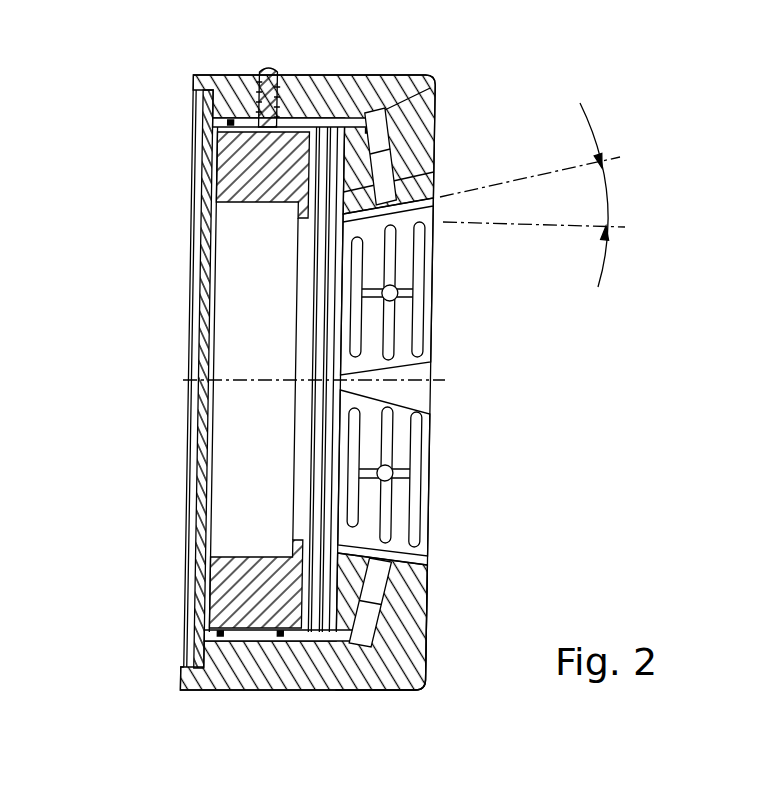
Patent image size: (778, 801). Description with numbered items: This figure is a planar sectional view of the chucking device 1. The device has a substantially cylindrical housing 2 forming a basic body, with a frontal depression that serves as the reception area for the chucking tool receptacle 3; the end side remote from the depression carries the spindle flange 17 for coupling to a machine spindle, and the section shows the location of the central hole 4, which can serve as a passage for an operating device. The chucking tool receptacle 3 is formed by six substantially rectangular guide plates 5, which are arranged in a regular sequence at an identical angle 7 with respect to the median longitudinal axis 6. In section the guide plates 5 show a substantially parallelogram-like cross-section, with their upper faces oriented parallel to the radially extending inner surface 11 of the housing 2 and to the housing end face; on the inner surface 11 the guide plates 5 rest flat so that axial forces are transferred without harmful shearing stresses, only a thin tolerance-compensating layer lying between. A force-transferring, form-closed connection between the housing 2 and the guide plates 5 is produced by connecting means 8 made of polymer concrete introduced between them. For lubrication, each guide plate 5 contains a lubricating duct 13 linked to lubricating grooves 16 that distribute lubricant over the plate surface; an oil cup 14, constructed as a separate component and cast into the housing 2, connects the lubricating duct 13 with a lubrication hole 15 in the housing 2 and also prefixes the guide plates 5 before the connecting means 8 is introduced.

The chucking device 1 is at (471, 74).
The housing 2 is at (327, 87).
The chucking tool receptacle 3 is at (466, 433).
The central hole 4 is at (253, 277).
The guide plates 5 is at (407, 343).
The median longitudinal axis 6 is at (183, 380).
The angle 7 is at (608, 195).
The connecting means 8 is at (420, 644).
The inner surface 11 is at (332, 496).
The lubricating duct 13 is at (401, 294).
The oil cup 14 is at (393, 113).
The lubrication hole 15 is at (238, 127).
The lubricating grooves 16 is at (418, 450).
The spindle flange 17 is at (161, 104).